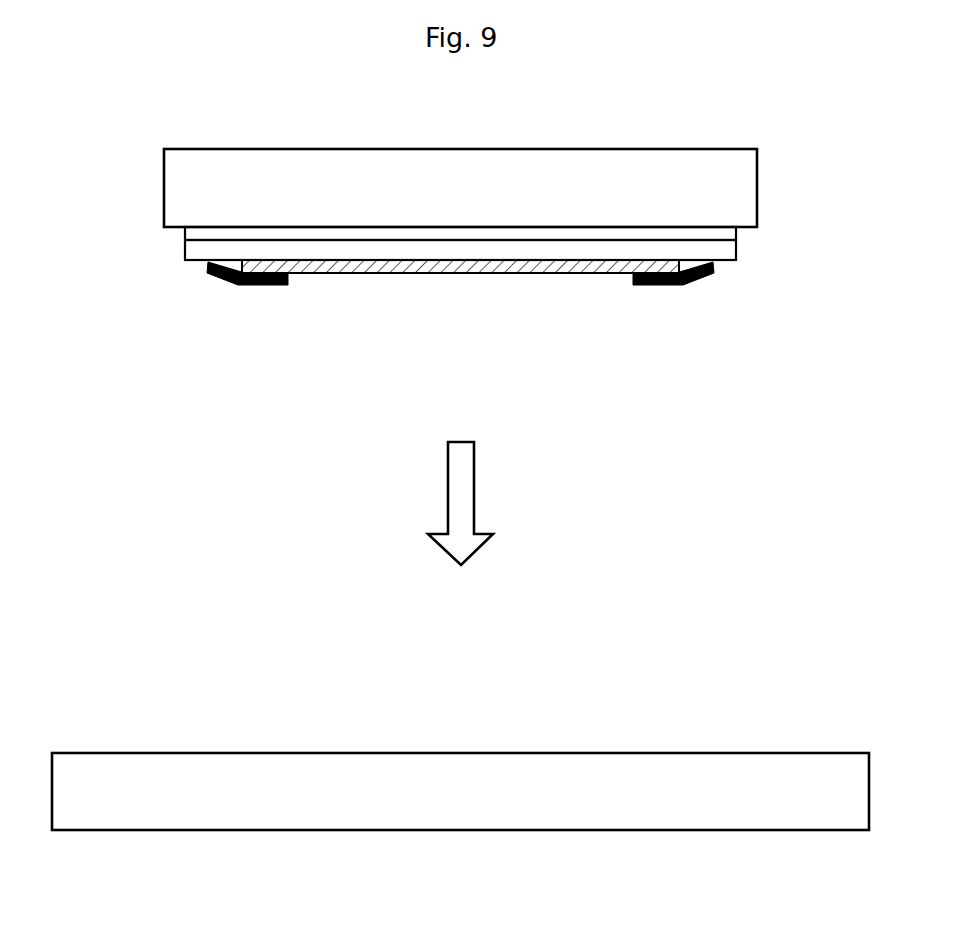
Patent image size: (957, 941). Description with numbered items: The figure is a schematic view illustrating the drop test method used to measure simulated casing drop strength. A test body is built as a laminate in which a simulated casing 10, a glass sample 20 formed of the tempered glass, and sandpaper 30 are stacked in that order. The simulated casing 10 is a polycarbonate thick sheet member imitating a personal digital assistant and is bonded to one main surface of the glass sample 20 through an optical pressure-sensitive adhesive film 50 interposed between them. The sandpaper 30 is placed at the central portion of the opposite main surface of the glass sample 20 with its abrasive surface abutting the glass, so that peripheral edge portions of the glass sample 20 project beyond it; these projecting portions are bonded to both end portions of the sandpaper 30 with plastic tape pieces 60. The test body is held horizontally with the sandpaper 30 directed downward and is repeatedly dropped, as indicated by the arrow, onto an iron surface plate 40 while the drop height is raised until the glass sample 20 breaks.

The simulated casing 10 is at (467, 169).
The glass sample 20 is at (730, 249).
The sandpaper 30 is at (530, 272).
The surface plate 40 is at (612, 809).
The optical pressure-sensitive adhesive film 50 is at (730, 234).
The plastic tape pieces 60 is at (222, 282).